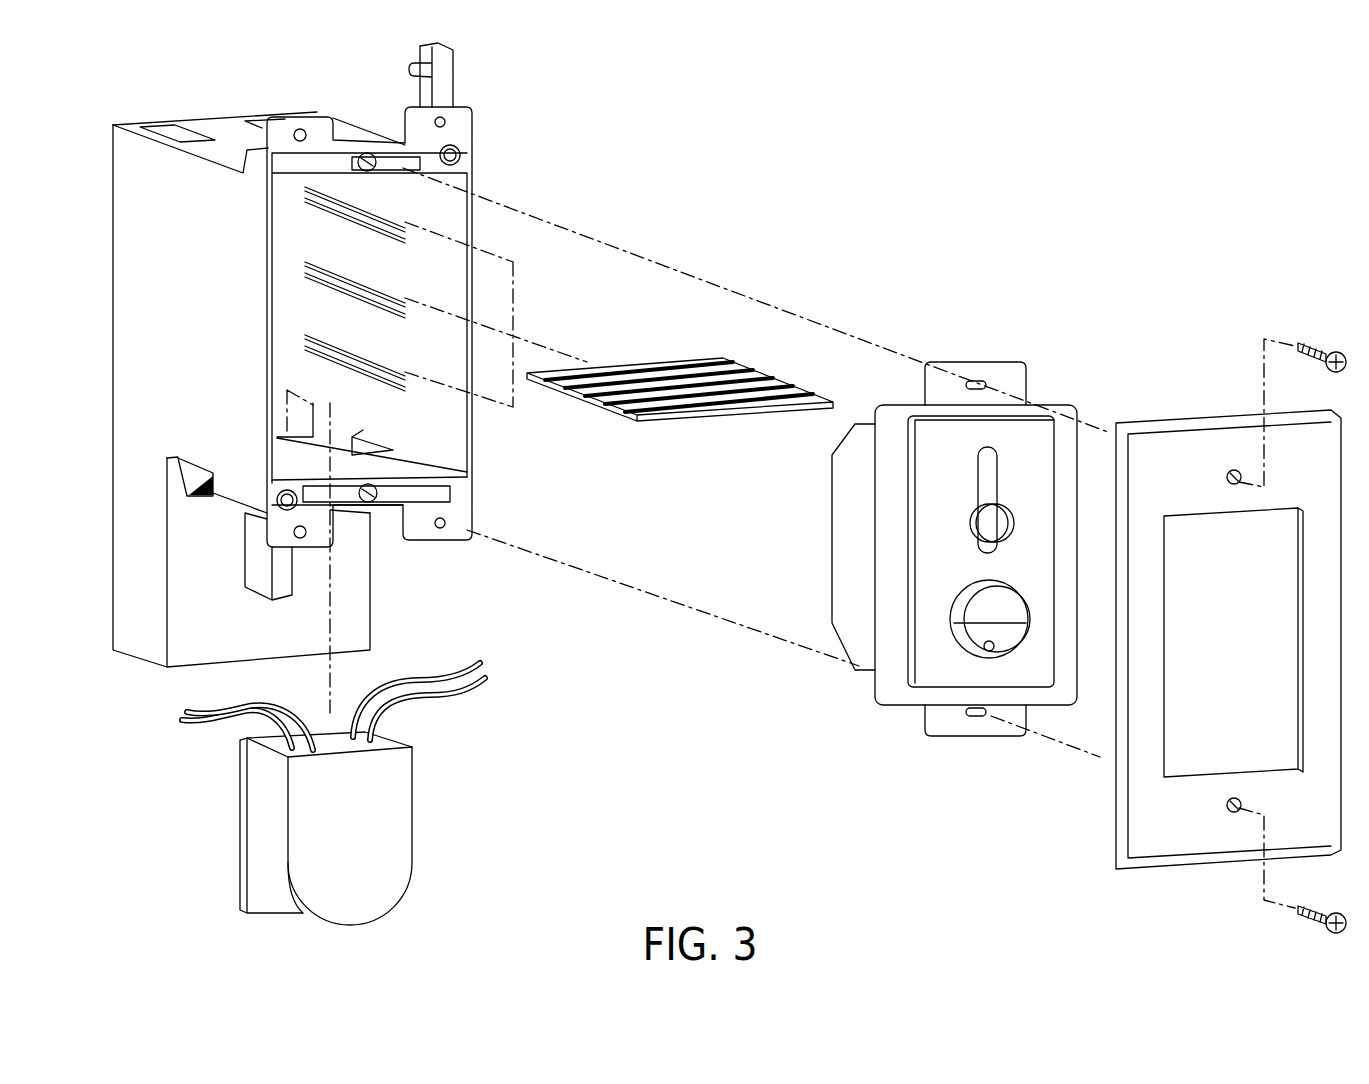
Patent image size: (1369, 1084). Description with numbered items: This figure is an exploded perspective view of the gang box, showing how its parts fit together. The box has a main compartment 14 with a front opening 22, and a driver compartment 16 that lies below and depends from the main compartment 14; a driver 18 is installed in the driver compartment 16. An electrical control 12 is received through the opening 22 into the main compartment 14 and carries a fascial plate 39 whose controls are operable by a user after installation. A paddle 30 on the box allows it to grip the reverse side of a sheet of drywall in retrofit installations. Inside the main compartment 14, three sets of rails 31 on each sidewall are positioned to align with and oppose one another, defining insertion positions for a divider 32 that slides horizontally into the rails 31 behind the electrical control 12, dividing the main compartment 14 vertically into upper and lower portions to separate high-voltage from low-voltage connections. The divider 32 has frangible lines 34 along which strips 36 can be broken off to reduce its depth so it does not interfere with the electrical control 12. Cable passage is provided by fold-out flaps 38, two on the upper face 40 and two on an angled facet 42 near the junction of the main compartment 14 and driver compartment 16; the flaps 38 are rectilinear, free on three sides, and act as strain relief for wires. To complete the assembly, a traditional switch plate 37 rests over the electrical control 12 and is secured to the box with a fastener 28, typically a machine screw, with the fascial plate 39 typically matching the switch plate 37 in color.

The electrical control 12 is at (937, 455).
The main compartment 14 is at (452, 437).
The driver compartment 16 is at (134, 598).
The driver 18 is at (268, 820).
The opening 22 is at (447, 220).
The fastener 28 is at (1300, 350).
The paddle 30 is at (448, 77).
The rails 31 is at (403, 230).
The divider 32 is at (712, 428).
The frangible lines 34 is at (680, 388).
The strips 36 is at (647, 410).
The switch plate 37 is at (1154, 467).
The fold-out flaps 38 is at (177, 133).
The fascial plate 39 is at (937, 666).
The upper face 40 is at (229, 130).
The angled facet 42 is at (187, 475).